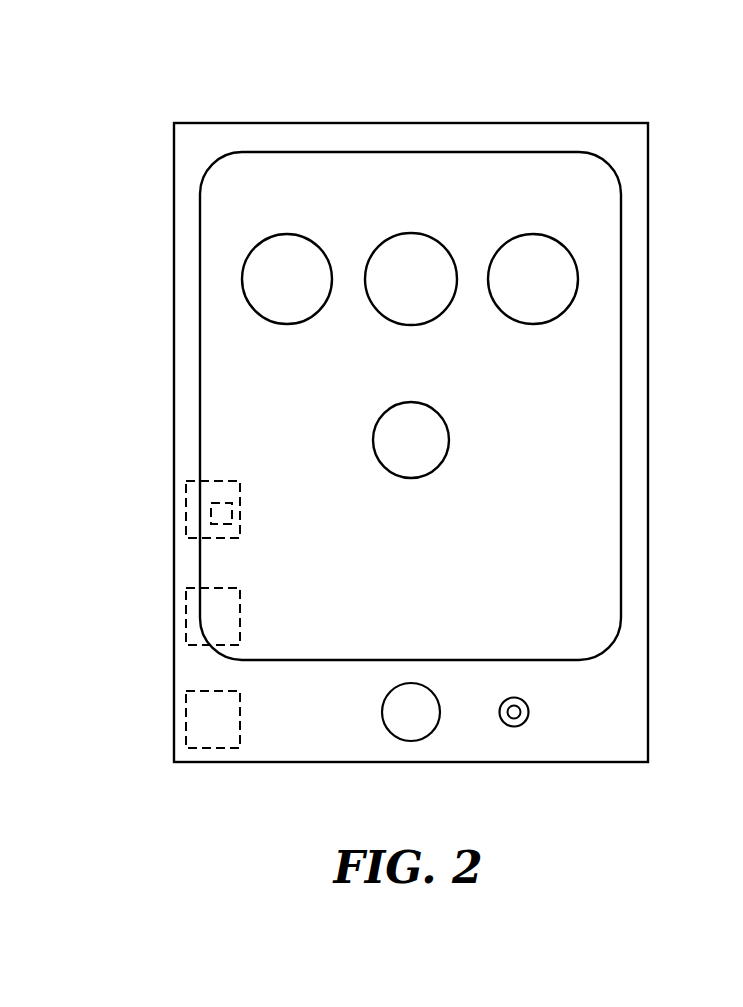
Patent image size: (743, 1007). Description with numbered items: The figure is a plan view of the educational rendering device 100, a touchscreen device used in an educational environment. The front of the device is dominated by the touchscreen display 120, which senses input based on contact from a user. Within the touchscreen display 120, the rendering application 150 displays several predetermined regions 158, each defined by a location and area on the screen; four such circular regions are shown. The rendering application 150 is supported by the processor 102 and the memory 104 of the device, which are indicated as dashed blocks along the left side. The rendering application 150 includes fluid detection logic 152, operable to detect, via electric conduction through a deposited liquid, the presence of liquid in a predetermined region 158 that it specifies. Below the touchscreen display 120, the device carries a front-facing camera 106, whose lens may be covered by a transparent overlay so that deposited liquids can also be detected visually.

The educational rendering device 100 is at (473, 123).
The touchscreen display 120 is at (568, 660).
The predetermined regions 158 is at (267, 291).
The rendering application 150 is at (192, 513).
The fluid detection logic 152 is at (222, 512).
The processor 102 is at (192, 618).
The memory 104 is at (192, 720).
The front-facing camera 106 is at (514, 726).